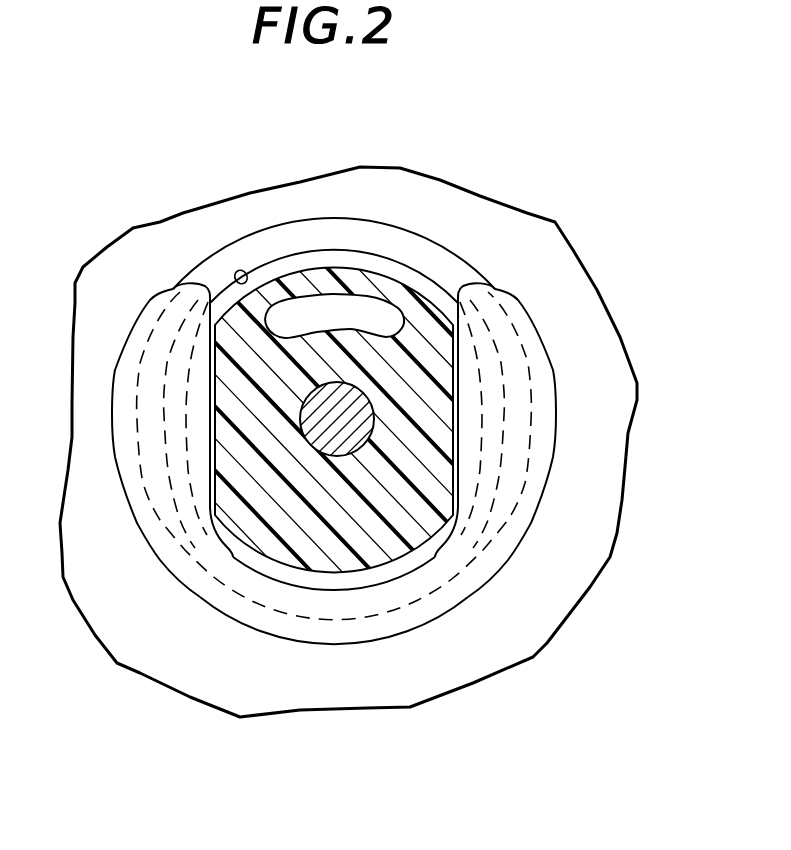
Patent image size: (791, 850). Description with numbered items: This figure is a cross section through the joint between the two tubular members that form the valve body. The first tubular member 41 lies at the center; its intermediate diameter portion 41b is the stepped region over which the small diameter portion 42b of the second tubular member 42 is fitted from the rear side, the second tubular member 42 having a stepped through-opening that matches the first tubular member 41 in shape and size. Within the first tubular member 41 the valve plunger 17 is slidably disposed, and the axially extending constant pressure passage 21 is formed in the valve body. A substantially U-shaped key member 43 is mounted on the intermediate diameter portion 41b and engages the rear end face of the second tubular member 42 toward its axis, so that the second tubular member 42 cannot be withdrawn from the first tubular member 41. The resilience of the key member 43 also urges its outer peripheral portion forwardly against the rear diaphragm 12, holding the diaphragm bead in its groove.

The rear diaphragm 12 is at (402, 670).
The valve plunger 17 is at (333, 458).
The constant pressure passage 21 is at (327, 272).
The first tubular member 41 is at (428, 277).
The intermediate diameter portion 41b is at (387, 257).
The second tubular member 42 is at (258, 236).
The small diameter portion 42b is at (237, 272).
The key member 43 is at (189, 585).